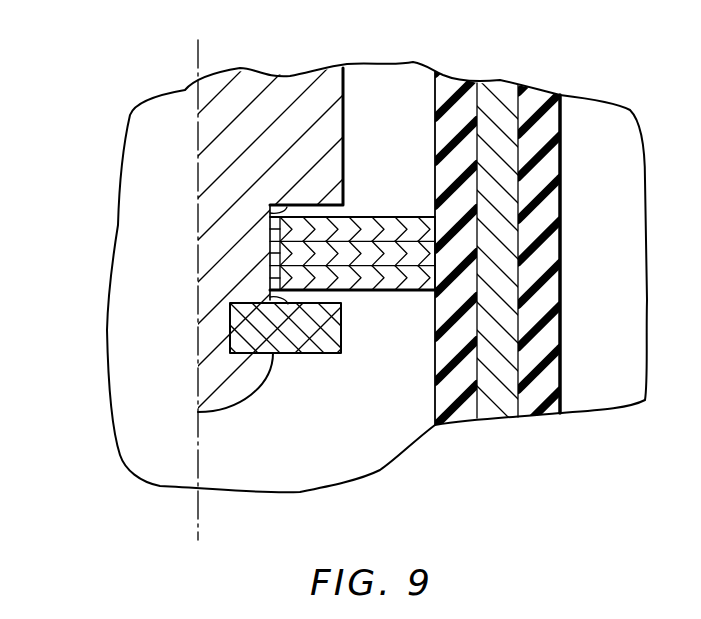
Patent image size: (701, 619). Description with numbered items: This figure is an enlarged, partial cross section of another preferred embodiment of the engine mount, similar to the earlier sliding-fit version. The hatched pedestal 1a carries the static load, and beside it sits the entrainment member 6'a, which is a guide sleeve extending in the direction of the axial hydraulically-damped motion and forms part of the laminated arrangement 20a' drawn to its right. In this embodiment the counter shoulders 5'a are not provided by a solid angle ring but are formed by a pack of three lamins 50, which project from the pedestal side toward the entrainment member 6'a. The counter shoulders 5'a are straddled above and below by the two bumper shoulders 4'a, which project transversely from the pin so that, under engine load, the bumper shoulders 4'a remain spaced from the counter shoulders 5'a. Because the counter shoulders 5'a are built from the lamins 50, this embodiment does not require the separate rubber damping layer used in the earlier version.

The pedestal 1a is at (288, 92).
The damping layer 20a' is at (499, 254).
The counter shoulders 5'a is at (352, 257).
The bumper shoulders 4'a is at (235, 278).
The lamins 50 is at (293, 236).
The entrainment member 6'a is at (520, 281).